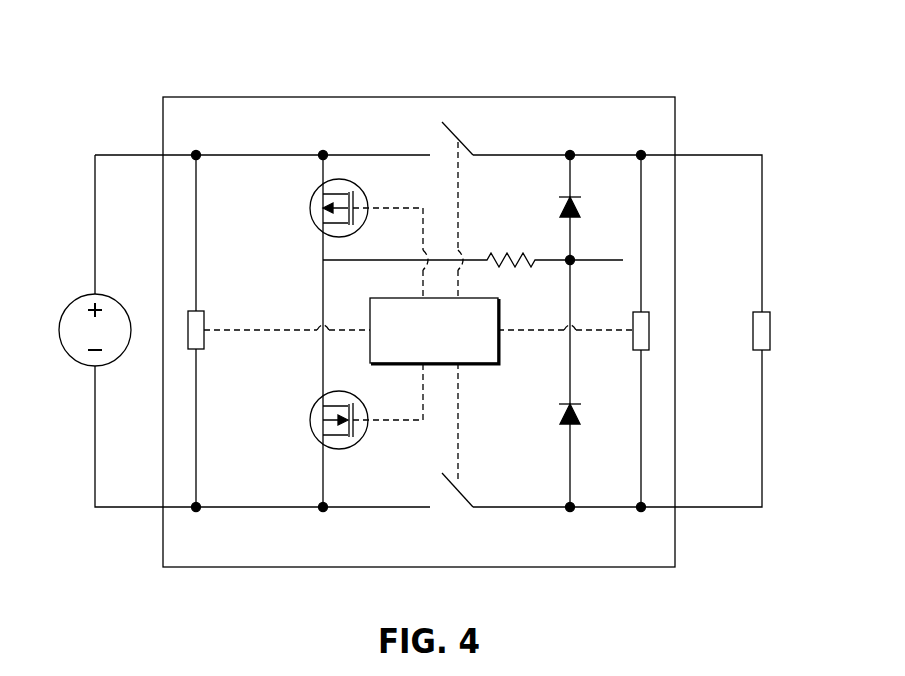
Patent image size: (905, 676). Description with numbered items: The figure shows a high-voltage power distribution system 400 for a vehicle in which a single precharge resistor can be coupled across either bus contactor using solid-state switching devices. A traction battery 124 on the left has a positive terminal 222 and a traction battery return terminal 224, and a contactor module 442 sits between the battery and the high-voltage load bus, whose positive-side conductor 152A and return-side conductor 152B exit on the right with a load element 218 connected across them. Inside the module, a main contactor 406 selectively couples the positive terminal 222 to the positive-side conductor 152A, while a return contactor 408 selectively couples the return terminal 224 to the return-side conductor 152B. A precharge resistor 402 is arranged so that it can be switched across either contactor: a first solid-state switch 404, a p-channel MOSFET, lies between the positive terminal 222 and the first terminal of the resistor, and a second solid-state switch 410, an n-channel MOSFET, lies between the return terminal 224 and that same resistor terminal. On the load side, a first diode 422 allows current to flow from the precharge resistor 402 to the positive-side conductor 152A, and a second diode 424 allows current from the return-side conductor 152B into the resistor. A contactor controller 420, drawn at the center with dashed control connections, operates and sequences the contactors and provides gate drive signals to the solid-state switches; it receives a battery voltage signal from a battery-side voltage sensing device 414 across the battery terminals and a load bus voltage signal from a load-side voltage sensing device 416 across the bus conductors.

The high-voltage power distribution system 400 is at (637, 46).
The contactor module 442 is at (391, 97).
The traction battery 124 is at (68, 305).
The positive terminal 222 is at (123, 155).
The traction battery return terminal 224 is at (123, 507).
The positive-side conductor 152A is at (697, 155).
The return-side conductor 152B is at (697, 507).
The load resistor 218 is at (753, 322).
The battery-side voltage sensing device 414 is at (204, 323).
The first solid-state switch 404 is at (310, 208).
The second solid-state switch 410 is at (310, 420).
The precharge resistor 402 is at (523, 257).
The first diode 422 is at (559, 207).
The second diode 424 is at (559, 414).
The load-side voltage sensing device 416 is at (633, 322).
The main contactor 406 is at (467, 147).
The return contactor 408 is at (467, 500).
The contactor controller 420 is at (403, 298).